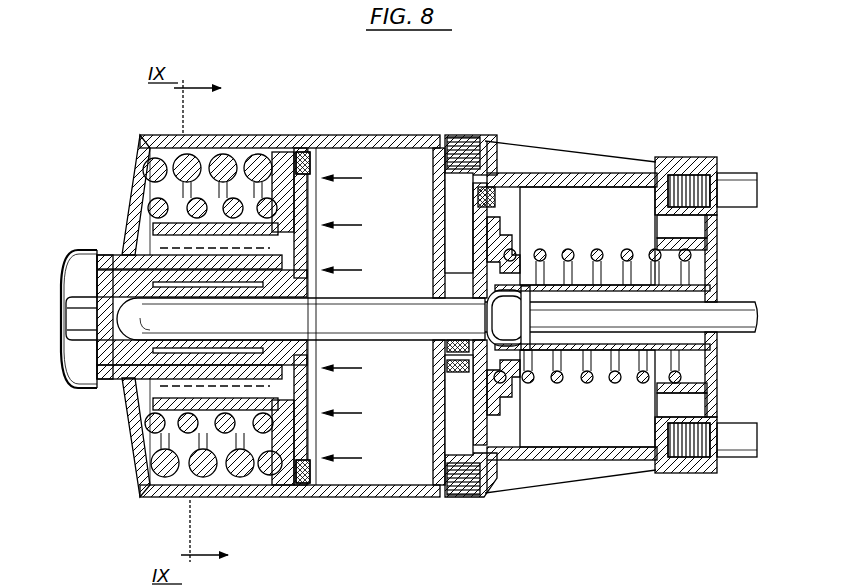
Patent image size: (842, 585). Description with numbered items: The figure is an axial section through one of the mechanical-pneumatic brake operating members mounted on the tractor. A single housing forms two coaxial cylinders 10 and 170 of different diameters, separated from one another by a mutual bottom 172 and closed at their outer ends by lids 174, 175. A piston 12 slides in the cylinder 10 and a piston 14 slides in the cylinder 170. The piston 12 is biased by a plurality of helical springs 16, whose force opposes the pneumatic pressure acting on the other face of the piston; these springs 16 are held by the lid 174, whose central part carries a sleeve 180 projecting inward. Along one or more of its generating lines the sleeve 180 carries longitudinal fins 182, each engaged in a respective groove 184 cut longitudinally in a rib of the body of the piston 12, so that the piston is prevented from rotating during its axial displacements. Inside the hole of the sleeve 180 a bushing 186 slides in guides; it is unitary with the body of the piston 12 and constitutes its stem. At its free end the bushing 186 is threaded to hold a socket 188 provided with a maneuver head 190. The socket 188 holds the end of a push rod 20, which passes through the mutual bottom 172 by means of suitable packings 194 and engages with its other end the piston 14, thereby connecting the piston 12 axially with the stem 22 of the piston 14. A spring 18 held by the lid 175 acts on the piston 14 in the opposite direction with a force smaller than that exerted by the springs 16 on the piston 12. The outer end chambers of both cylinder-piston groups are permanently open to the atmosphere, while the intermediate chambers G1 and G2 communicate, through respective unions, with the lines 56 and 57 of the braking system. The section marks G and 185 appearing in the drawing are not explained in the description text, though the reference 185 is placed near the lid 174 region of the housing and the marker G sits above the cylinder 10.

The cylinder 10 is at (372, 135).
The piston 12 is at (284, 474).
The piston 14 is at (518, 462).
The helical springs 16 is at (247, 472).
The spring 18 is at (615, 383).
The push rod 20 is at (368, 307).
The stem 22 is at (724, 310).
The line 56 is at (473, 492).
The line 57 is at (468, 146).
The cylinder 170 is at (568, 462).
The mutual bottom 172 is at (448, 432).
The lid 174 is at (143, 495).
The lid 175 is at (706, 392).
The sleeve 180 is at (175, 412).
The longitudinal fins 182 is at (300, 391).
The groove 184 is at (160, 247).
The wall 185 is at (150, 433).
The bushing 186 is at (130, 270).
The socket 188 is at (99, 382).
The maneuver head 190 is at (88, 340).
The packings 194 is at (432, 274).
The gap G is at (301, 131).
The intermediate chamber G1 is at (348, 474).
The intermediate chamber G2 is at (460, 207).